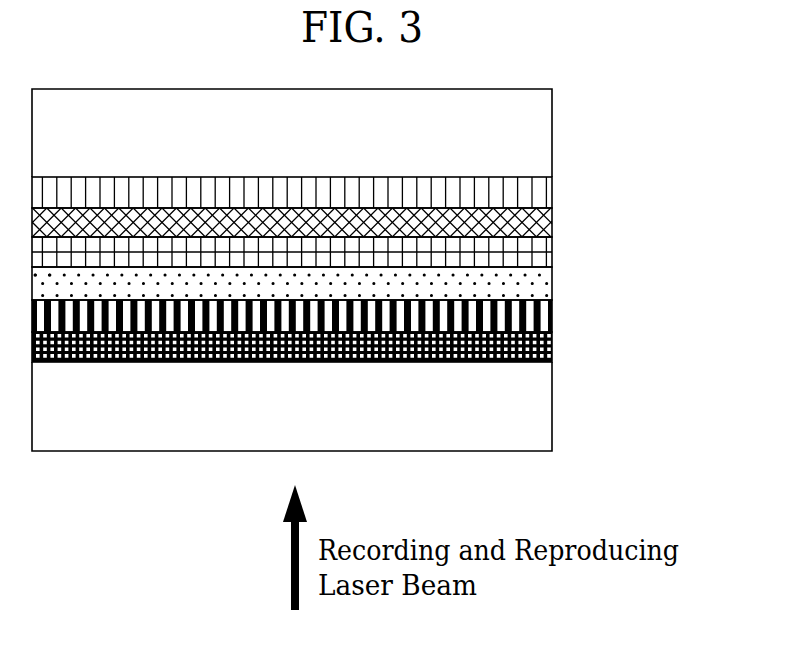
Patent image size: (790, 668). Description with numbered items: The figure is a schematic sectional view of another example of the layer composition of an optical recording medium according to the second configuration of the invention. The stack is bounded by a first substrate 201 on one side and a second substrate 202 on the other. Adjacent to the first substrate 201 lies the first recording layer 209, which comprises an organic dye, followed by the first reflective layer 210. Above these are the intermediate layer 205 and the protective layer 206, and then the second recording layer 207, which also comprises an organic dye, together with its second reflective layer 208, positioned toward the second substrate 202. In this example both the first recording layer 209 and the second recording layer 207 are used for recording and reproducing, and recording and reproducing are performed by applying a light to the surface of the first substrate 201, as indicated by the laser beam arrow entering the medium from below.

The first substrate 201 is at (545, 410).
The second substrate 202 is at (543, 132).
The intermediate layer 205 is at (545, 287).
The protective layer 206 is at (545, 247).
The second recording layer 207 is at (545, 217).
The second reflective layer 208 is at (545, 190).
The first recording layer 209 is at (545, 345).
The first reflective layer 210 is at (545, 313).